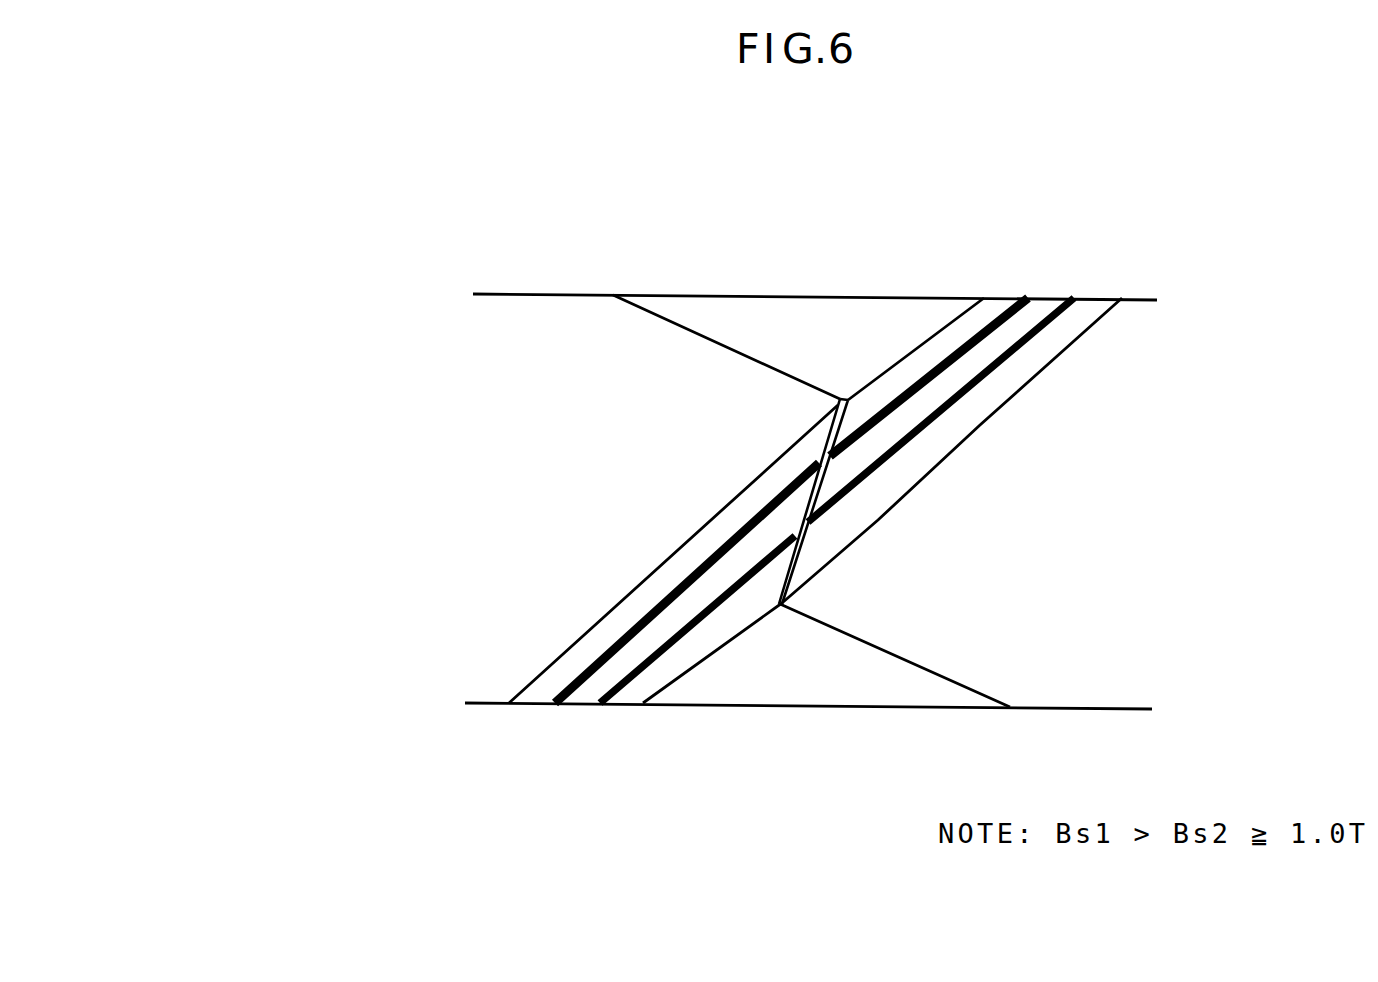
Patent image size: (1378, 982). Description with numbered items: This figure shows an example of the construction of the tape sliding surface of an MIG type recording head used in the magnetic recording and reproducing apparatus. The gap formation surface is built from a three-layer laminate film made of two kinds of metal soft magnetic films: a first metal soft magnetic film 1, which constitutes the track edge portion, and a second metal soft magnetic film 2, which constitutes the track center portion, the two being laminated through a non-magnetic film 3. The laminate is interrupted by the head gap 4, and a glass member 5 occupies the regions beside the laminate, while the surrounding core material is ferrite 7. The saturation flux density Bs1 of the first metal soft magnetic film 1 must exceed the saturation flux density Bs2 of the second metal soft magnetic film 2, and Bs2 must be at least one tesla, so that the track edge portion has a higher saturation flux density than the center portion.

The first metal soft magnetic film 1 is at (1015, 385).
The second metal soft magnetic film 2 is at (920, 417).
The non-magnetic film 3 is at (1023, 300).
The head gap 4 is at (788, 568).
The glass member 5 is at (890, 318).
The ferrite 7 is at (533, 313).